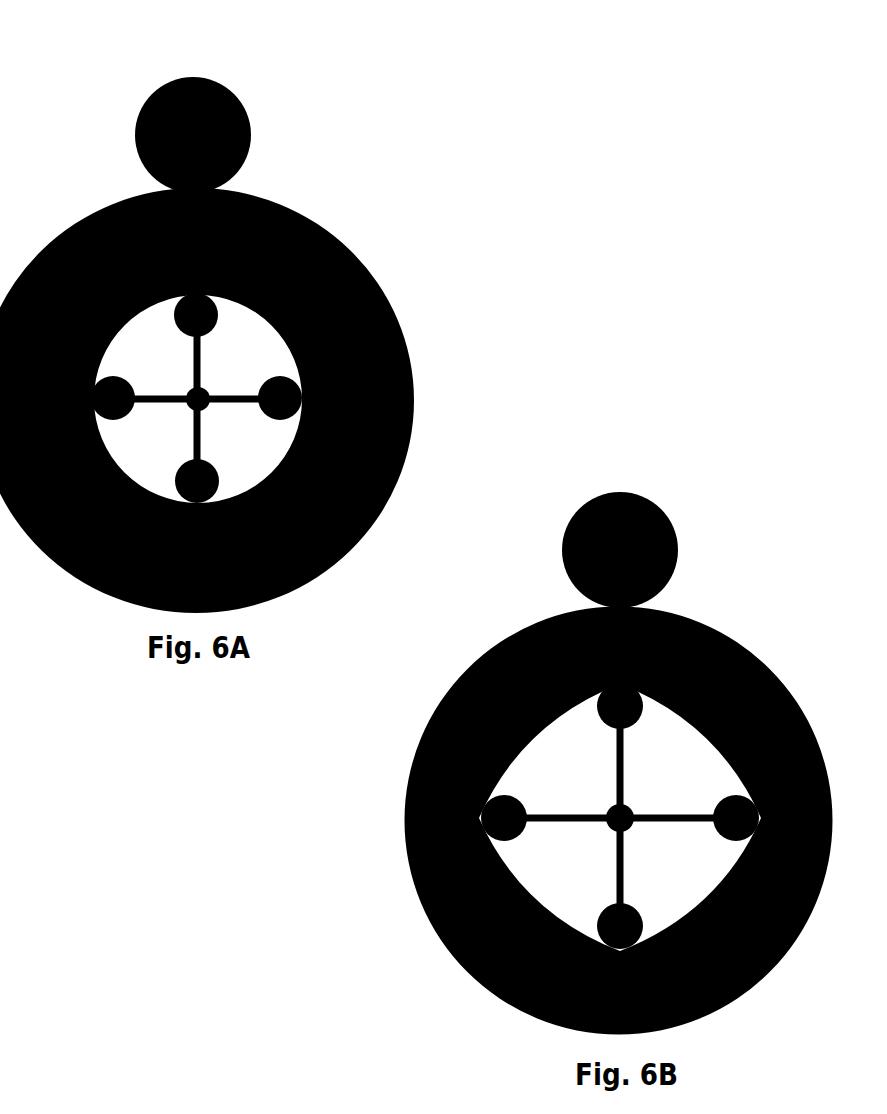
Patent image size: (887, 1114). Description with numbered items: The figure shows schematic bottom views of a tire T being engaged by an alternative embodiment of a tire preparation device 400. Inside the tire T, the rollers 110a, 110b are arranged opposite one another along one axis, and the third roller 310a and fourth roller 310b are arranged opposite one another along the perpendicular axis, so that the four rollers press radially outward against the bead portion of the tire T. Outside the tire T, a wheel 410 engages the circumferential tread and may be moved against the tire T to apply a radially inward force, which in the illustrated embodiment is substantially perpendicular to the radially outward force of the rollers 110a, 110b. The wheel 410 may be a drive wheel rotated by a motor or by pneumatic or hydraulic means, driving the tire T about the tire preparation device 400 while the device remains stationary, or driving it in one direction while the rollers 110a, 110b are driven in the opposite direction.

In FIG. 6A, the tire preparation device 400 is at (226, 314).
In FIG. 6B, the tire preparation device 400 is at (552, 745).
In FIG. 6A, the wheel 410 is at (152, 104).
In FIG. 6B, the wheel 410 is at (653, 531).
In FIG. 6A, the tire T is at (226, 400).
In FIG. 6B, the tire T is at (618, 790).
In FIG. 6A, the roller 110a is at (115, 380).
In FIG. 6B, the roller 110a is at (519, 802).
In FIG. 6A, the roller 110b is at (265, 420).
In FIG. 6B, the roller 110b is at (733, 840).
In FIG. 6A, the third roller 310a is at (211, 330).
In FIG. 6B, the third roller 310a is at (636, 723).
In FIG. 6A, the fourth roller 310b is at (173, 482).
In FIG. 6B, the fourth roller 310b is at (603, 910).